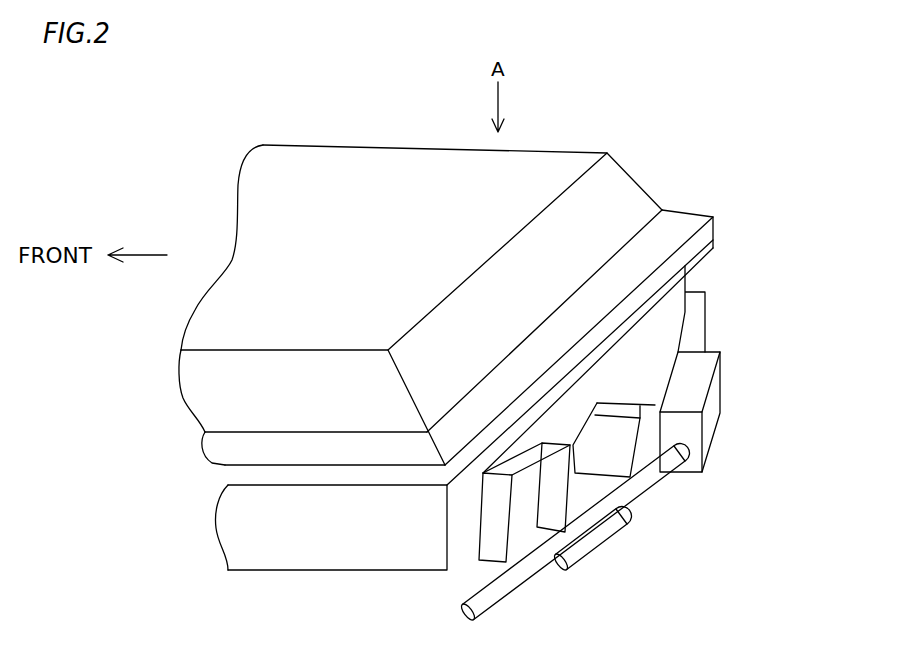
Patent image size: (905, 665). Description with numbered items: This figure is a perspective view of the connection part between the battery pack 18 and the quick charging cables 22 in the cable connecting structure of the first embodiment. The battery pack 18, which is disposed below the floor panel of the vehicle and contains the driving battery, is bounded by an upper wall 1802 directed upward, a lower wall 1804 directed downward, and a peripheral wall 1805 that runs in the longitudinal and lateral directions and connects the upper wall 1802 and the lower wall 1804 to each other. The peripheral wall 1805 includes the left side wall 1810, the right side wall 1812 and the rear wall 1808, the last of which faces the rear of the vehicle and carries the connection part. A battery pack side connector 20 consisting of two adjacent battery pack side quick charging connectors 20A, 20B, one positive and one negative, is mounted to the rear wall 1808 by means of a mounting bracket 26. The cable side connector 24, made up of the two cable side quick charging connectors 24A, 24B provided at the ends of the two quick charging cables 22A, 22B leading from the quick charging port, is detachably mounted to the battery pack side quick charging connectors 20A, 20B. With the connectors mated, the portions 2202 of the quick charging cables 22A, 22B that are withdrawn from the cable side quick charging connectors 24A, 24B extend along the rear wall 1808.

The battery pack 18 is at (375, 147).
The upper wall 1802 is at (292, 177).
The right side wall 1812 is at (553, 148).
The lower wall 1804 is at (242, 570).
The left side wall 1810 is at (352, 527).
The peripheral wall 1805 is at (467, 527).
The rear wall 1808 is at (553, 487).
The mounting bracket 26 is at (653, 330).
The battery pack side connector 20 is at (711, 344).
The battery pack side quick charging connector 20A is at (570, 422).
The battery pack side quick charging connector 20B is at (655, 372).
The cable side connector 24 is at (709, 450).
The cable side quick charging connector 24A is at (615, 458).
The cable side quick charging connector 24B is at (708, 420).
The quick charging cable 22 is at (596, 544).
The quick charging cable 22A is at (513, 588).
The quick charging cable 22B is at (585, 557).
The portion of quick charging cable 2202 is at (680, 470).